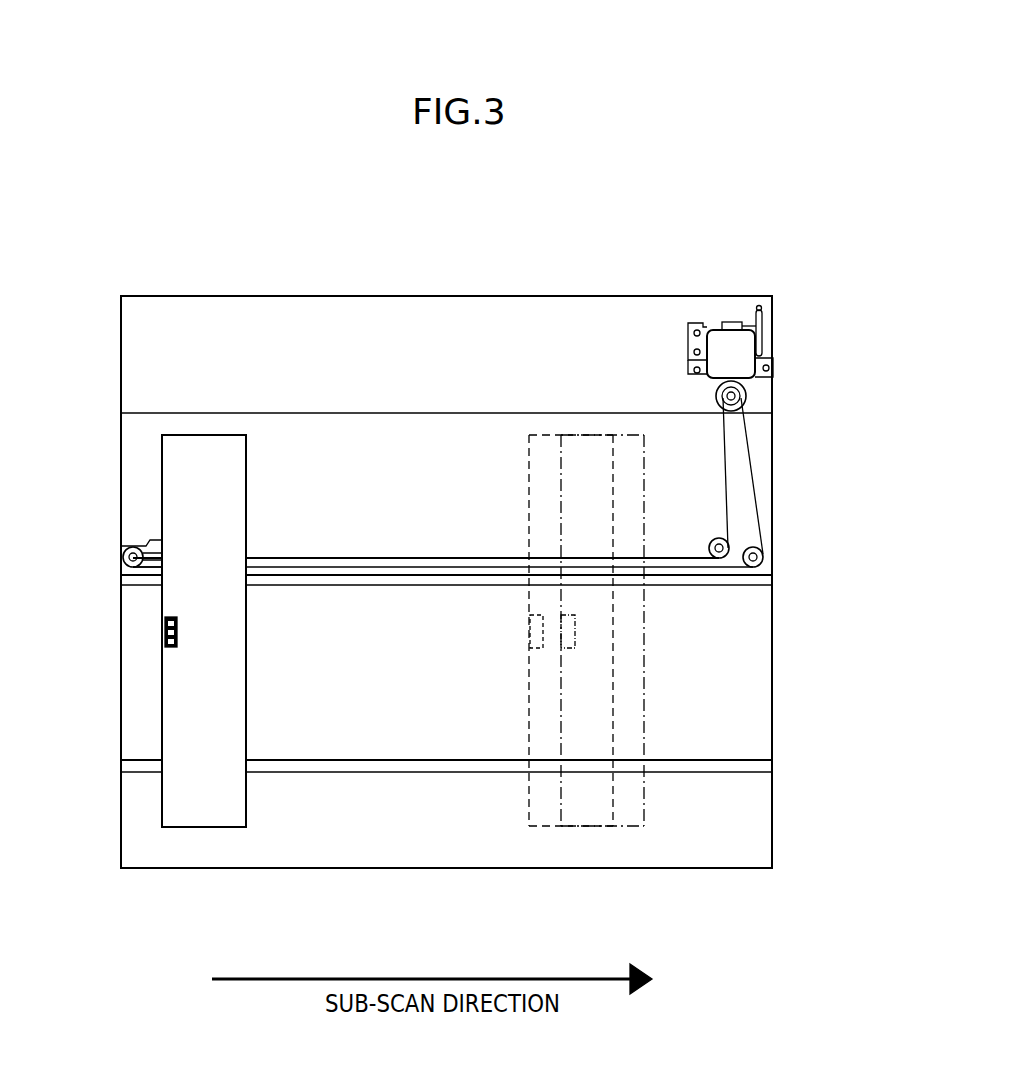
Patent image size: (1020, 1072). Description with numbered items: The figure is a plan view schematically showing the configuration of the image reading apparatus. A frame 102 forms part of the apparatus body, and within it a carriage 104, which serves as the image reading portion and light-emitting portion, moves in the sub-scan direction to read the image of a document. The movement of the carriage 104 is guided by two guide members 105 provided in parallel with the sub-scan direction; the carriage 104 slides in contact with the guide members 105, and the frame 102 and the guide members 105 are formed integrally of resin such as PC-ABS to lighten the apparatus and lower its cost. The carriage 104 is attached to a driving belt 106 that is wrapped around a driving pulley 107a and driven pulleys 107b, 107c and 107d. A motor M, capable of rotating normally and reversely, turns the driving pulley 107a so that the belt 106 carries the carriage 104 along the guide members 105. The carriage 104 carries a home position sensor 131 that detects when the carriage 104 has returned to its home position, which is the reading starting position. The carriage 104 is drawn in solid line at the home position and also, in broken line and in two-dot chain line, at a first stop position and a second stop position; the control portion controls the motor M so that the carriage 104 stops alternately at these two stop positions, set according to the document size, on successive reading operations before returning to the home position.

The frame 102 is at (762, 688).
The carriage 104 is at (172, 710).
The guide member 105 is at (423, 586).
The driving belt 106 is at (385, 556).
The driving pulley 107a is at (746, 396).
The driven pulley 107b is at (713, 539).
The driven pulley 107c is at (764, 557).
The driven pulley 107d is at (132, 547).
The home position sensor 131 is at (177, 632).
The motor M is at (733, 342).